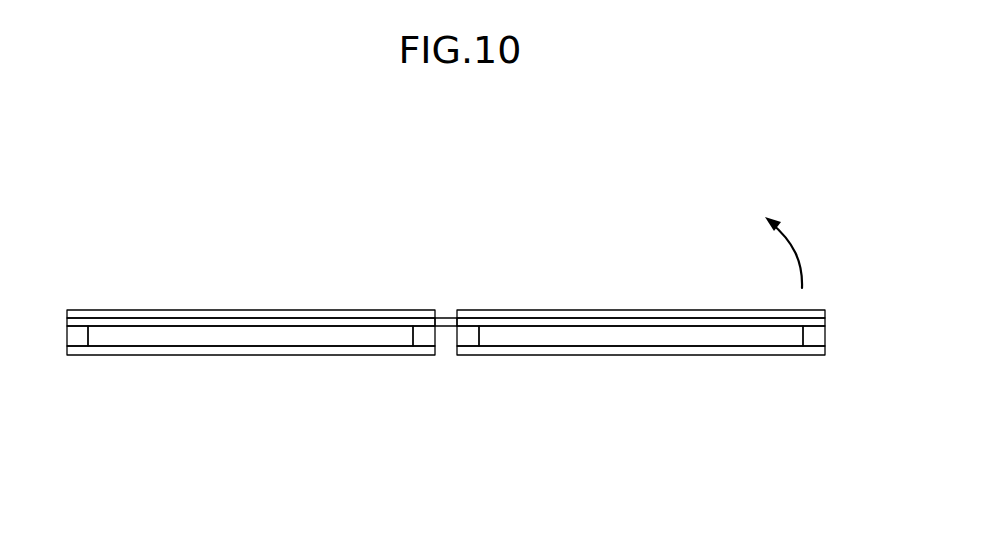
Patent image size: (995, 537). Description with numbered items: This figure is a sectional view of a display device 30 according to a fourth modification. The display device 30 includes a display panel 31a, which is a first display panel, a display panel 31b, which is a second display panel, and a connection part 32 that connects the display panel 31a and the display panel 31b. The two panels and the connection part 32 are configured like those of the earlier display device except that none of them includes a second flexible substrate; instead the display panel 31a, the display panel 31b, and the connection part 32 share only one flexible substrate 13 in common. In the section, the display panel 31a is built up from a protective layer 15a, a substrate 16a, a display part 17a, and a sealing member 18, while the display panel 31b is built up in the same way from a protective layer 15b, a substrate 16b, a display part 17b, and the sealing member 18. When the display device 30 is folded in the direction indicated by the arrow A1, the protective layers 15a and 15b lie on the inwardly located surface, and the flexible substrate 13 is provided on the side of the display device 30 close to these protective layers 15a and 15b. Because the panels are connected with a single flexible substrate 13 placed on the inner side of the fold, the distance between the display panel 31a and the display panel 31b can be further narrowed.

The display device 30 is at (832, 150).
The arrow A1 is at (788, 236).
The flexible substrate 13 is at (829, 313).
The protective layer 15a is at (249, 310).
The protective layer 15b is at (641, 310).
The substrate 16a is at (253, 356).
The substrate 16b is at (643, 356).
The display part 17a is at (159, 334).
The display part 17b is at (549, 334).
The sealing member 18 is at (67, 334).
The display panel 31a is at (435, 425).
The display panel 31b is at (457, 425).
The connection part 32 is at (445, 353).